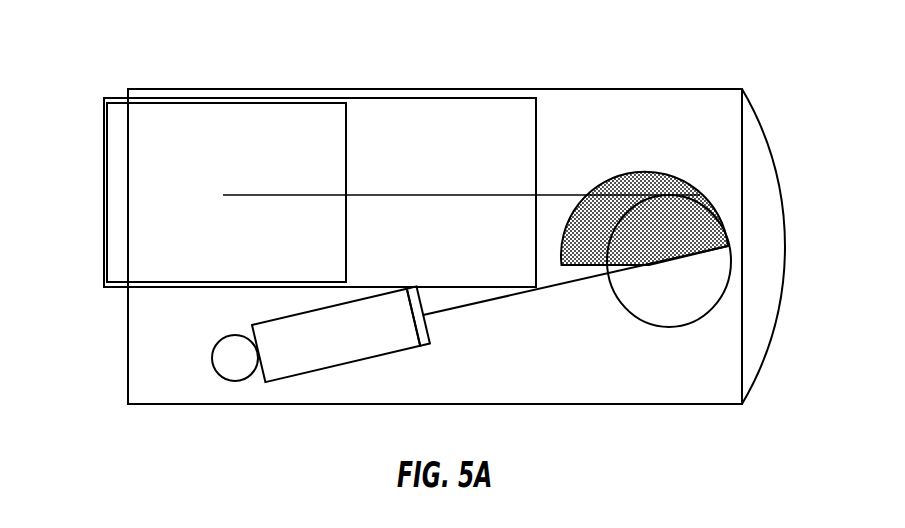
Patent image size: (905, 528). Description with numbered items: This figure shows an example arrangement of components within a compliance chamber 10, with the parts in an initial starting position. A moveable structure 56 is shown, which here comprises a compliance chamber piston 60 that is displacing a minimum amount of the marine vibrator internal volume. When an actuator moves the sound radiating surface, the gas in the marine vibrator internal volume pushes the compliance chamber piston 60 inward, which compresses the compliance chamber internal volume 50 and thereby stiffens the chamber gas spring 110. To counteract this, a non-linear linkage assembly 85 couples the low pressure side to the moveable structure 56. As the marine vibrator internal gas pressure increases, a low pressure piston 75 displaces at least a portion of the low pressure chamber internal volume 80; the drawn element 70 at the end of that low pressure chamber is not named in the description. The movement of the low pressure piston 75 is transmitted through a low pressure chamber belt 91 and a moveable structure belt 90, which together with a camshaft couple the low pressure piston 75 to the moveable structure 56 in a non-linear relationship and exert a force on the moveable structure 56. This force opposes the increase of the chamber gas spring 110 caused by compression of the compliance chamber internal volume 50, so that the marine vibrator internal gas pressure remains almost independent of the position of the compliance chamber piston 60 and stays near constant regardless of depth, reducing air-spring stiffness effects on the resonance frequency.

The compliance chamber 10 is at (495, 50).
The compliance chamber internal volume 50 is at (617, 110).
The moveable structure 56 is at (160, 153).
The compliance chamber piston 60 is at (259, 127).
The pivot 70 is at (265, 332).
The low pressure piston 75 is at (432, 345).
The low pressure chamber internal volume 80 is at (313, 358).
The non-linear linkage assembly 85 is at (645, 148).
The moveable structure belt 90 is at (552, 195).
The low pressure chamber belt 91 is at (572, 287).
The chamber gas spring 110 is at (680, 377).